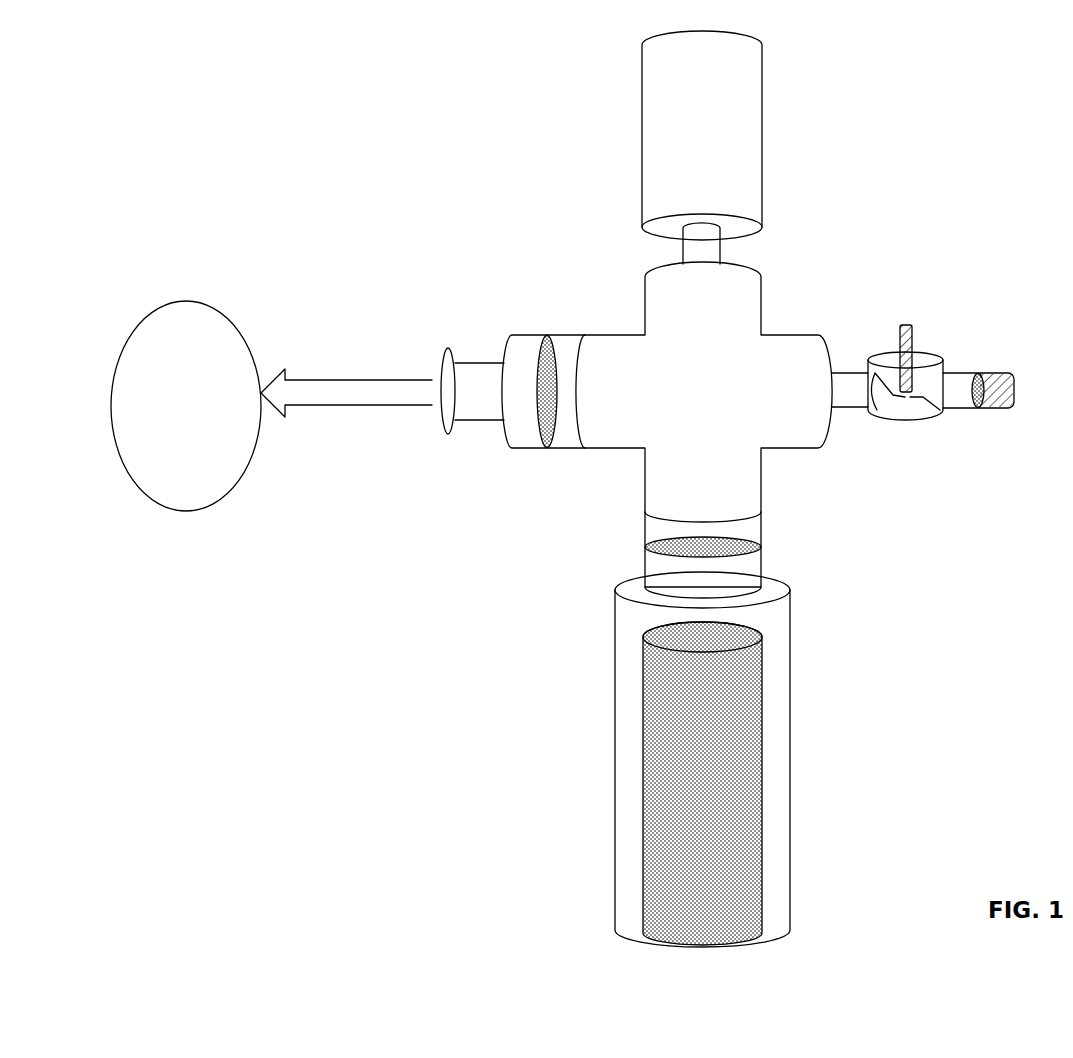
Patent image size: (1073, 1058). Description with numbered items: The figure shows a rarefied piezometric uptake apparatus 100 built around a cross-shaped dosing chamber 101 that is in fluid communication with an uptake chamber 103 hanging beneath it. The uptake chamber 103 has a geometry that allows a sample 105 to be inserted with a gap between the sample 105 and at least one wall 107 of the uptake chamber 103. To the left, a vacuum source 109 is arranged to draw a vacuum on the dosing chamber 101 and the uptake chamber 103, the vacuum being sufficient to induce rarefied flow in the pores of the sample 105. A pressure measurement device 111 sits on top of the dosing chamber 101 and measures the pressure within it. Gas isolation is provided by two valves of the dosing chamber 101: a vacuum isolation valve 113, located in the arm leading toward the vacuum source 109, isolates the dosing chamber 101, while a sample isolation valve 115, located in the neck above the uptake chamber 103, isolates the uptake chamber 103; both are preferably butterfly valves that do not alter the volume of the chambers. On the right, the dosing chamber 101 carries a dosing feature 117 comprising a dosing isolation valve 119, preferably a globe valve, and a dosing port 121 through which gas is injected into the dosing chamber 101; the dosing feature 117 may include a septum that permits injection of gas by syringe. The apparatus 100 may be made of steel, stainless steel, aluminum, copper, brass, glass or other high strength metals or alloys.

The rarefied piezometric uptake apparatus 100 is at (356, 148).
The dosing chamber 101 is at (738, 315).
The uptake chamber 103 is at (778, 675).
The sample 105 is at (762, 748).
The wall 107 is at (627, 755).
The vacuum source 109 is at (237, 467).
The pressure measurement device 111 is at (738, 134).
The vacuum isolation valve 113 is at (537, 347).
The sample isolation valve 115 is at (748, 540).
The dosing feature 117 is at (955, 306).
The dosing isolation valve 119 is at (917, 403).
The dosing port 121 is at (993, 372).